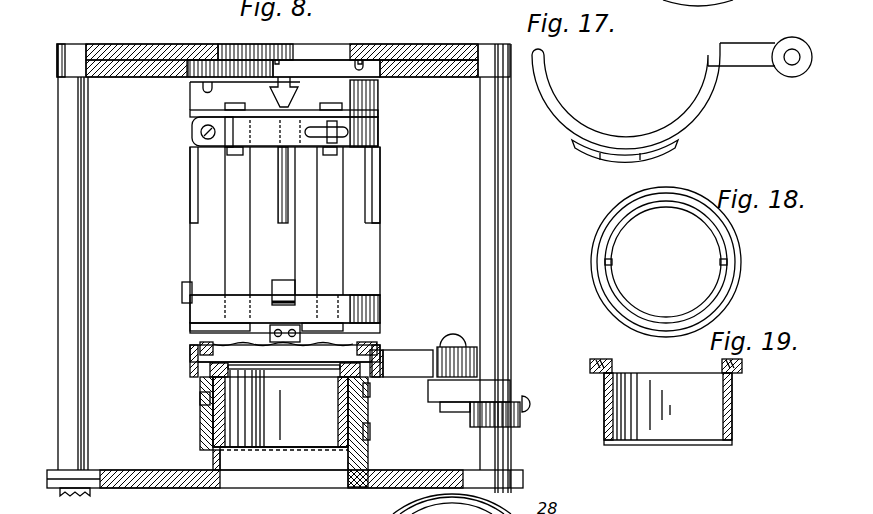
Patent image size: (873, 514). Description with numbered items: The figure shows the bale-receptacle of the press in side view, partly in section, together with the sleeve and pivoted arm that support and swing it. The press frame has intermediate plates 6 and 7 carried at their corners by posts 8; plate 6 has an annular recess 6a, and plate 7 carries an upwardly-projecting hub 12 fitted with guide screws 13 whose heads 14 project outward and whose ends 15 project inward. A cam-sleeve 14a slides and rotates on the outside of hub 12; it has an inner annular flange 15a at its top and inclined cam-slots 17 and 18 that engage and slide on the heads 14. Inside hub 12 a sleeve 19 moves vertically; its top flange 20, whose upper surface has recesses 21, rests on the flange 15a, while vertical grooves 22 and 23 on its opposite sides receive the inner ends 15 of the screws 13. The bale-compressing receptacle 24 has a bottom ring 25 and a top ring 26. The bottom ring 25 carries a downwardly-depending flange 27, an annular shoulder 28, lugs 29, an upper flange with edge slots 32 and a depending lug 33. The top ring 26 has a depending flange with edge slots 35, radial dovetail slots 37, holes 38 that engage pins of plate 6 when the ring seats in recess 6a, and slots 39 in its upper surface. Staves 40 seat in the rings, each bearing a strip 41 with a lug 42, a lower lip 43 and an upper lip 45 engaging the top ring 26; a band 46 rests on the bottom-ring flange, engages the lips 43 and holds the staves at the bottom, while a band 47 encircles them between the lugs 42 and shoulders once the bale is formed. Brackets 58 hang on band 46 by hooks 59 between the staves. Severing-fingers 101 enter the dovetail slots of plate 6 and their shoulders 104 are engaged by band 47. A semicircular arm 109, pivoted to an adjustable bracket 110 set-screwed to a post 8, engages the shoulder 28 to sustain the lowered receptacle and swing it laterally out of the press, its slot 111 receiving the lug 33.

In FIG. 8, the intermediate plate 6 is at (95, 60).
In FIG. 8, the annular recess 6a is at (303, 62).
In FIG. 8, the intermediate plate 7 is at (130, 488).
In FIG. 8, the post 8 is at (63, 290).
In FIG. 8, the hub 12 is at (215, 470).
In FIG. 8, the guide pin or screw 13 is at (203, 412).
In FIG. 8, the head 14 is at (200, 407).
In FIG. 8, the cam-sleeve 14a is at (370, 393).
In FIG. 8, the inner end 15 is at (207, 437).
In FIG. 8, the inner annular flange 15a is at (378, 352).
In FIG. 8, the inclined cam-slot 17 is at (202, 395).
In FIG. 8, the inclined cam-slot 18 is at (370, 430).
In FIG. 8, the sleeve 19 is at (253, 440).
In FIG. 18, the sleeve 19 is at (592, 252).
In FIG. 19, the sleeve 19 is at (735, 395).
In FIG. 8, the flange 20 is at (212, 371).
In FIG. 18, the flange 20 is at (735, 245).
In FIG. 19, the flange 20 is at (590, 366).
In FIG. 8, the recess 21 is at (340, 365).
In FIG. 19, the recess 21 is at (598, 362).
In FIG. 8, the vertical groove 22 is at (213, 463).
In FIG. 18, the vertical groove 22 is at (603, 263).
In FIG. 19, the vertical groove 22 is at (606, 410).
In FIG. 8, the vertical groove 23 is at (347, 440).
In FIG. 18, the vertical groove 23 is at (727, 262).
In FIG. 19, the vertical groove 23 is at (738, 418).
In FIG. 8, the bale-compressing chamber or receptacle 24 is at (195, 248).
In FIG. 8, the bottom ring 25 is at (380, 327).
In FIG. 8, the top ring 26 is at (380, 108).
In FIG. 8, the downwardly-depending flange 27 is at (195, 355).
In FIG. 8, the annular shoulder 28 is at (380, 376).
In FIG. 8, the pin or lug 29 is at (193, 365).
In FIG. 8, the slot 32 is at (227, 330).
In FIG. 8, the lug 33 is at (380, 300).
In FIG. 8, the slot 35 is at (195, 118).
In FIG. 8, the radial dovetail slot 37 is at (270, 85).
In FIG. 8, the hole 38 is at (203, 85).
In FIG. 8, the slot 39 is at (283, 77).
In FIG. 8, the stave or slat 40 is at (205, 210).
In FIG. 8, the strip 41 is at (233, 188).
In FIG. 8, the lug 42 is at (227, 151).
In FIG. 8, the lip 43 is at (227, 323).
In FIG. 8, the upwardly-projecting lip 45 is at (225, 108).
In FIG. 8, the band 46 is at (380, 287).
In FIG. 8, the band 47 is at (350, 128).
In FIG. 8, the bracket 58 is at (185, 285).
In FIG. 8, the hook 59 is at (183, 296).
In FIG. 8, the severing-finger 101 is at (228, 150).
In FIG. 8, the shoulder 104 is at (295, 150).
In FIG. 8, the semicircular arm 109 is at (197, 372).
In FIG. 17, the semicircular arm 109 is at (702, 115).
In FIG. 8, the adjustable bracket 110 is at (508, 383).
In FIG. 17, the adjustable bracket 110 is at (773, 58).
In FIG. 17, the slot 111 is at (617, 158).